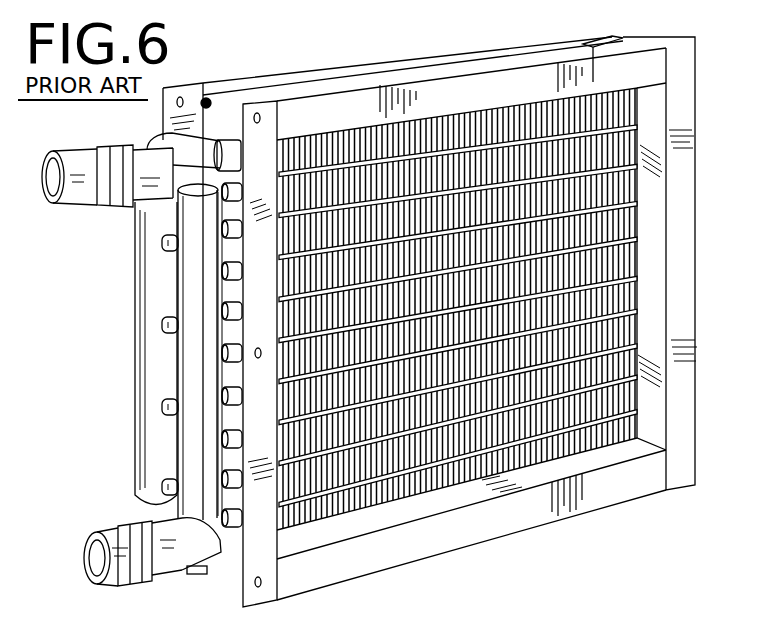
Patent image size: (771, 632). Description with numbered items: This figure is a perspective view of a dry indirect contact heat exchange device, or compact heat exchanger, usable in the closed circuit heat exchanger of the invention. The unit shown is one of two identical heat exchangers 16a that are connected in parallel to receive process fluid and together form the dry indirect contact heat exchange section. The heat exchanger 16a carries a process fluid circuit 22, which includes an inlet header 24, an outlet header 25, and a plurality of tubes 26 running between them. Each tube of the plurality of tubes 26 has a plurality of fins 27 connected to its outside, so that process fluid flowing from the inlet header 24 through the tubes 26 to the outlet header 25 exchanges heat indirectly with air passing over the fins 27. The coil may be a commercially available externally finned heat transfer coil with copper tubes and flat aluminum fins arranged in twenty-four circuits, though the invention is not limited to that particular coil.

The heat exchanger 16a is at (333, 64).
The process fluid circuit 22 is at (228, 437).
The inlet header 24 is at (57, 175).
The outlet header 25 is at (98, 561).
The tubes 26 is at (226, 232).
The fins 27 is at (623, 180).